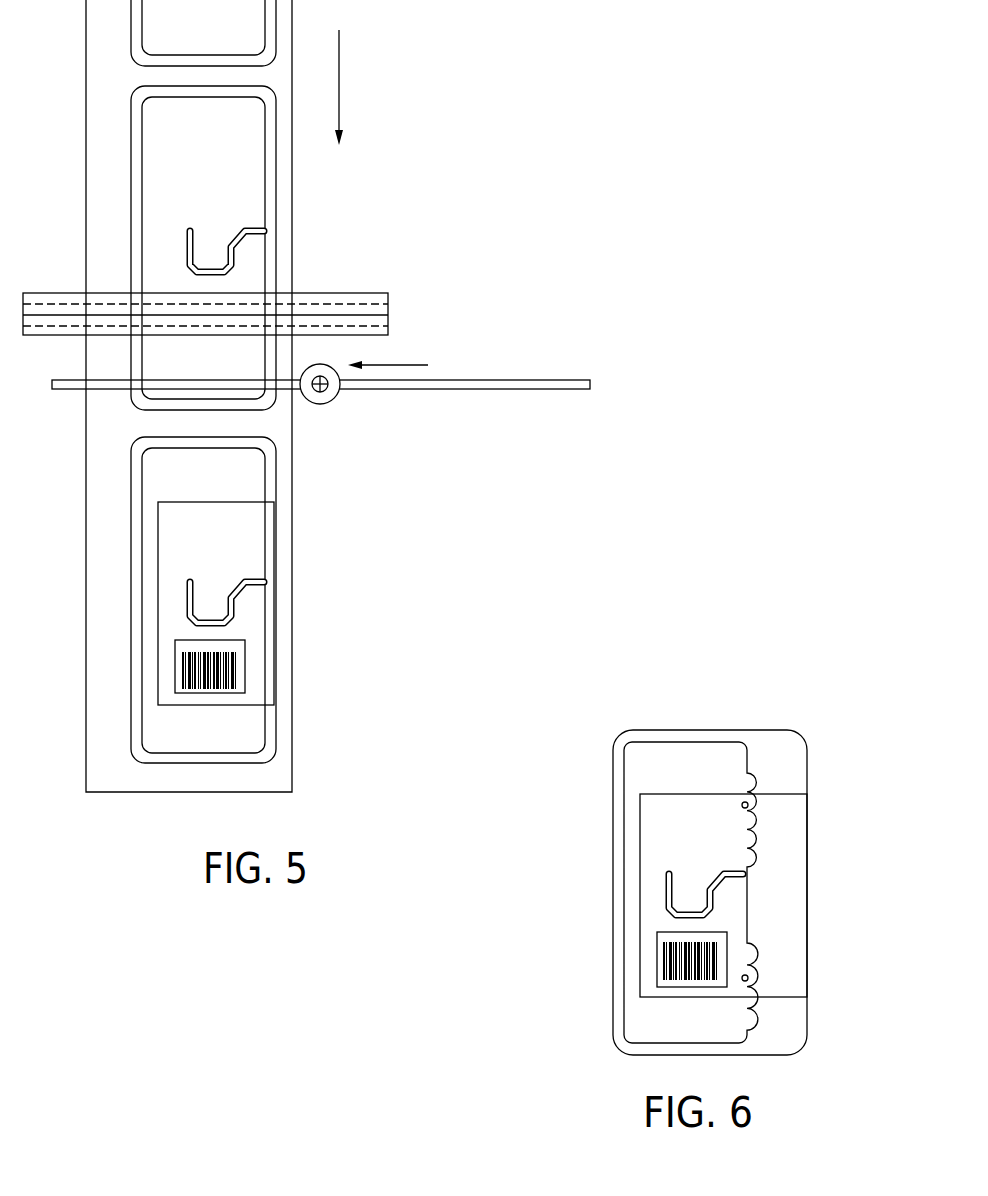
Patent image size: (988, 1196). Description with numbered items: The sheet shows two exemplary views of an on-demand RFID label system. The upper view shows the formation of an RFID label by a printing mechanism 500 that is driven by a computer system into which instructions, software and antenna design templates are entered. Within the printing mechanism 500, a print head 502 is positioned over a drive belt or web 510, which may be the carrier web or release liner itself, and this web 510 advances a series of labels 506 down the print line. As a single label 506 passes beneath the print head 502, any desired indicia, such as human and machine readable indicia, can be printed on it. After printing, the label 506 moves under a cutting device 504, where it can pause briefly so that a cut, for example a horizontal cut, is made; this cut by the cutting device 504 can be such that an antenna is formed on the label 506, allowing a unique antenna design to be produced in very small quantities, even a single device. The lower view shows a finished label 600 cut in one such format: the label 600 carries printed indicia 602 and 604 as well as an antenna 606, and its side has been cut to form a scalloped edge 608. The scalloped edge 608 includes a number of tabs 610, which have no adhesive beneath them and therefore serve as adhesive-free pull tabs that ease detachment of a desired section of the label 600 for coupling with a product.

In FIG. 5, the printing mechanism 500 is at (456, 78).
In FIG. 5, the print head 502 is at (388, 293).
In FIG. 5, the cutting device 504 is at (521, 380).
In FIG. 5, the label 506 is at (131, 201).
In FIG. 5, the web 510 is at (106, 551).
In FIG. 6, the label 600 is at (647, 840).
In FIG. 6, the printed indicia 602 is at (634, 762).
In FIG. 6, the printed indicia 604 is at (648, 953).
In FIG. 6, the antenna 606 is at (728, 868).
In FIG. 6, the scalloped edge 608 is at (755, 785).
In FIG. 6, the tabs 610 is at (755, 978).